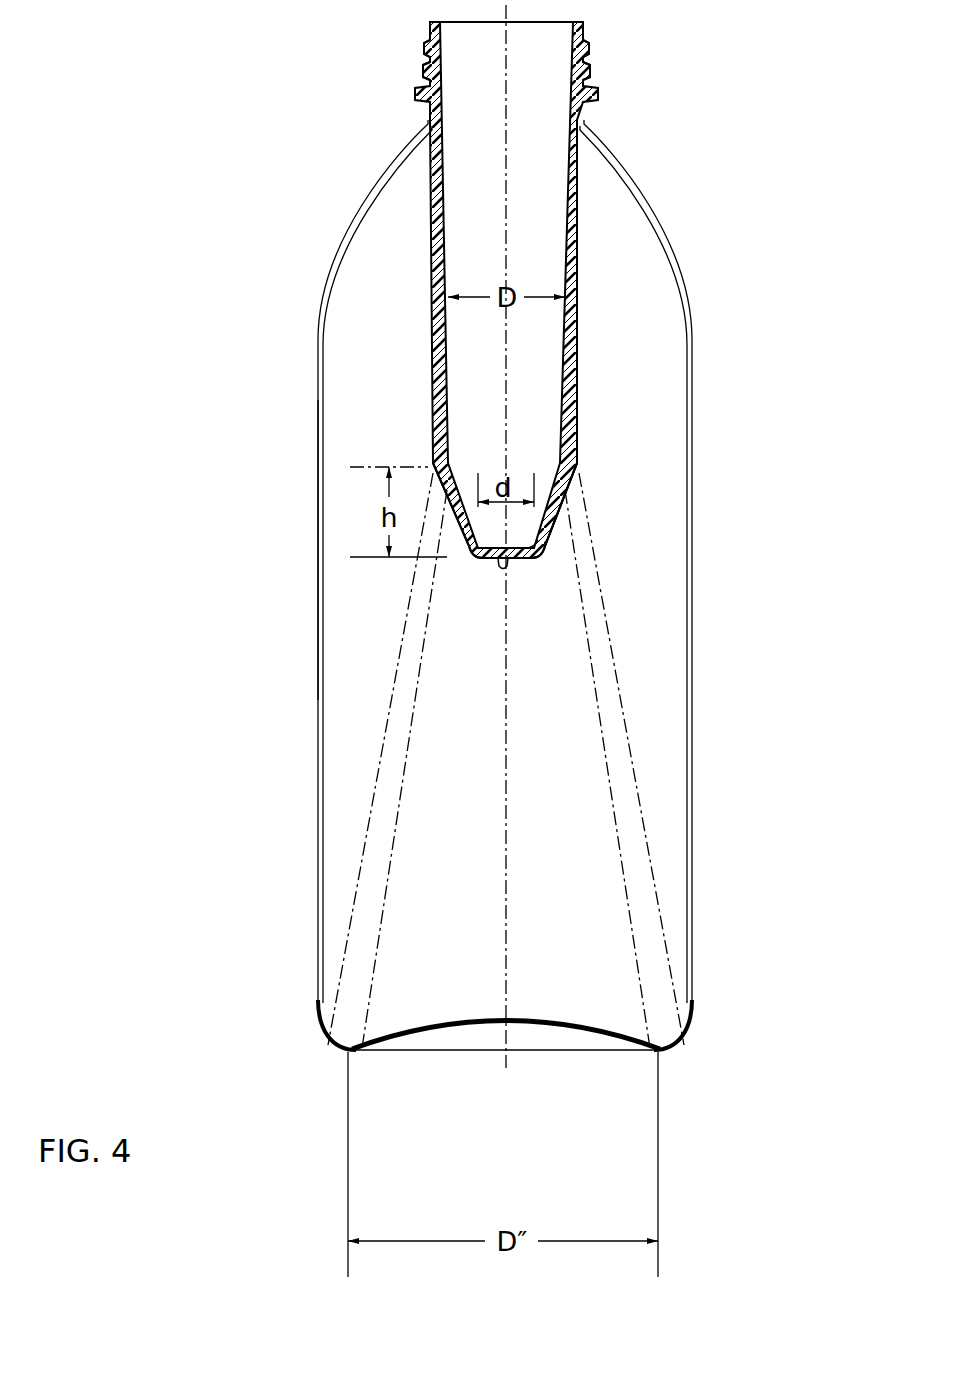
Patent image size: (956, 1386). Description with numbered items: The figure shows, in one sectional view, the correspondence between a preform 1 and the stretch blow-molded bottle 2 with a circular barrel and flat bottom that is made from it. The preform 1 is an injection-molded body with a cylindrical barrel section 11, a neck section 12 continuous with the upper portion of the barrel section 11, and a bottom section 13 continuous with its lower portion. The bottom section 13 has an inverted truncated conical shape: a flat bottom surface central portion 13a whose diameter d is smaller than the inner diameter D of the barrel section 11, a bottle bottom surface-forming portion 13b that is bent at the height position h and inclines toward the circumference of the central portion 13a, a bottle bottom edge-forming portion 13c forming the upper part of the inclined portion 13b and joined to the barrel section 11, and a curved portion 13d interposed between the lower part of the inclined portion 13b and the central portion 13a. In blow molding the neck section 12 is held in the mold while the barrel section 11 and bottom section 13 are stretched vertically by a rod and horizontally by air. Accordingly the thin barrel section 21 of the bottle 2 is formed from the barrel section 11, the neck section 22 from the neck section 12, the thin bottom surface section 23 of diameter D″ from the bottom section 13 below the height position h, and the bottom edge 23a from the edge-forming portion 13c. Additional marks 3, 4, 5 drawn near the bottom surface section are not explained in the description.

The preform 1 is at (430, 305).
The bottle 2 is at (318, 398).
The bottom position 3 is at (590, 1027).
The bottom position 4 is at (612, 1031).
The bottom position 5 is at (633, 1038).
The barrel section 11 is at (578, 272).
The neck section 12 is at (589, 53).
The bottom section 13 is at (560, 518).
The bottom surface central portion 13a is at (492, 563).
The bottle bottom surface-forming portion 13b is at (540, 549).
The bottle bottom edge-forming portion 13c is at (578, 478).
The curved portion 13d is at (538, 556).
The barrel section 21 is at (318, 533).
The neck section 22 is at (424, 70).
The bottom surface section 23 is at (467, 1022).
The bottom edge 23a is at (660, 1042).